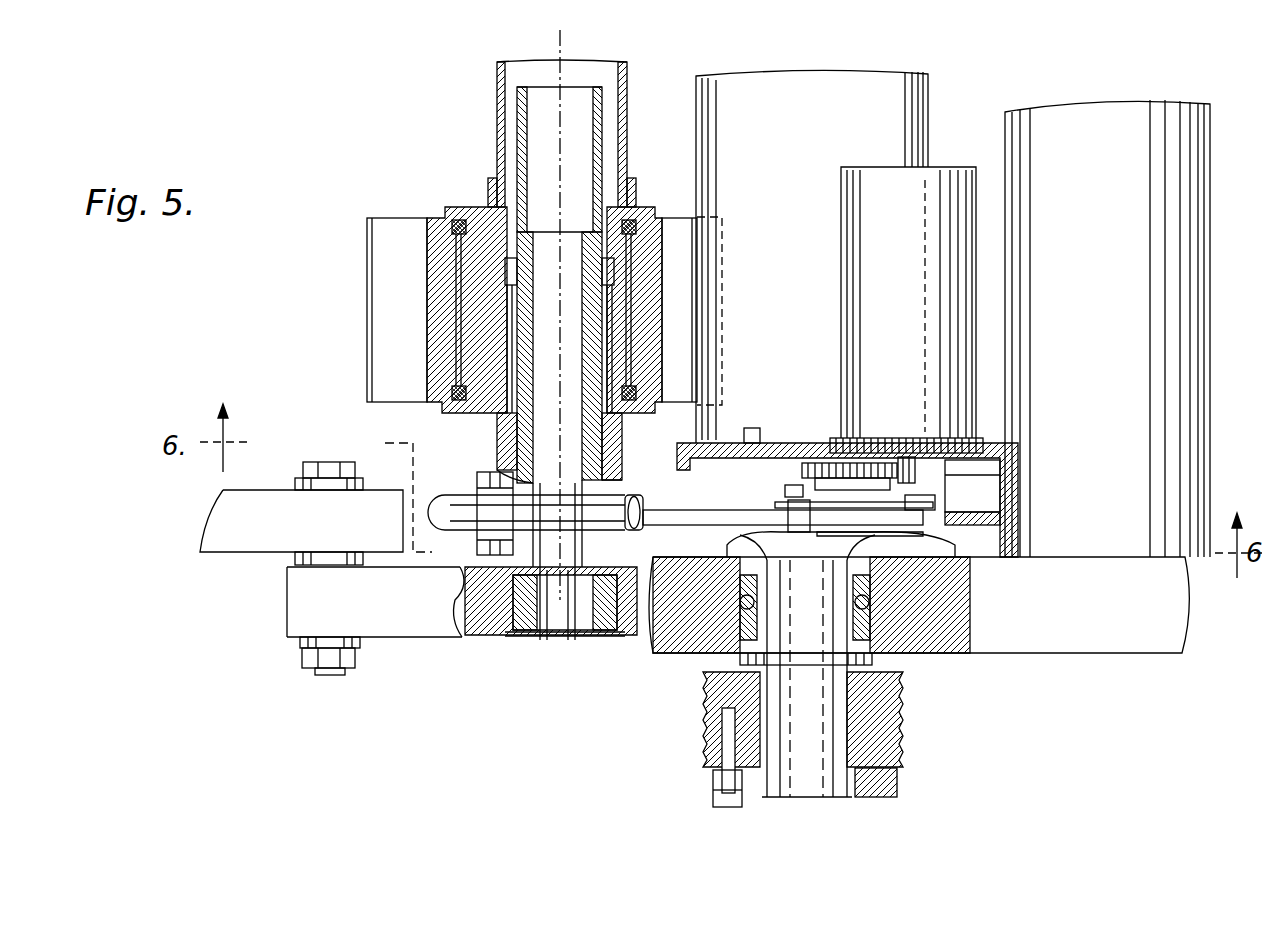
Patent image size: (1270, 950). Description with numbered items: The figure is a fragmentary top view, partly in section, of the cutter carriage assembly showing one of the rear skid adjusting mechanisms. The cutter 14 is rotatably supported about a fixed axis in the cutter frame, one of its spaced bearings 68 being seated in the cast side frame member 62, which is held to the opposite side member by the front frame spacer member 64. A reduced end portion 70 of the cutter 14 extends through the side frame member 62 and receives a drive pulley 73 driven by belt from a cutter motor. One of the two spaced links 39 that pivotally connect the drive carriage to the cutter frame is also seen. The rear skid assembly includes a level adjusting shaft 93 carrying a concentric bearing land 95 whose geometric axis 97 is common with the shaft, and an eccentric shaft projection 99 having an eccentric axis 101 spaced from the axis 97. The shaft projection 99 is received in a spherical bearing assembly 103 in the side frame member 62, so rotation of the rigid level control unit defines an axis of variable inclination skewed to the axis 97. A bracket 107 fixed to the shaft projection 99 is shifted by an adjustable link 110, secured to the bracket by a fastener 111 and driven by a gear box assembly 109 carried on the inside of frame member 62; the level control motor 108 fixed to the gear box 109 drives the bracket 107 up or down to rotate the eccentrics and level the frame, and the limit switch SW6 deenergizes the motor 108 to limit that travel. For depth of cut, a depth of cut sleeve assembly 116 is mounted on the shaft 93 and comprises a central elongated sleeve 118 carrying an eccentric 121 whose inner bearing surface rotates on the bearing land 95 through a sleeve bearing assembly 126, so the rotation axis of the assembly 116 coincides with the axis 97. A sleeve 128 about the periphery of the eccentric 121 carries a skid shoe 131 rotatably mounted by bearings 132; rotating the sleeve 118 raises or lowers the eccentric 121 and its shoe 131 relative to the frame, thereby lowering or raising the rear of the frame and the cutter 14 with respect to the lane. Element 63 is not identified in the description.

The cutter 14 is at (700, 427).
The spaced links 39 is at (218, 545).
The side frame member 62 is at (1086, 640).
The mounting plate 63 is at (402, 628).
The front frame spacer member 64 is at (1188, 290).
The bearing 68 is at (683, 650).
The reduced end portion 70 is at (800, 792).
The drive pulley 73 is at (903, 747).
The level adjusting shaft 93 is at (600, 121).
The bearing land 95 is at (520, 375).
The geometric axis 97 is at (558, 47).
The shaft projection 99 is at (578, 605).
The eccentric axis 101 is at (546, 612).
The spherical bearing assembly 103 is at (524, 602).
The bracket 107 is at (480, 532).
The level control motor 108 is at (845, 398).
The gear box assembly 109 is at (1018, 480).
The adjustable link 110 is at (712, 512).
The fastener 111 is at (482, 484).
The depth of cut sleeve assembly 116 is at (501, 315).
The central elongated sleeve 118 is at (497, 106).
The eccentric 121 is at (485, 262).
The sleeve bearing assembly 126 is at (495, 423).
The sleeve 128 is at (440, 226).
The skid shoe 131 is at (370, 328).
The bearing 132 is at (458, 295).
The limit switch SW6 is at (990, 498).